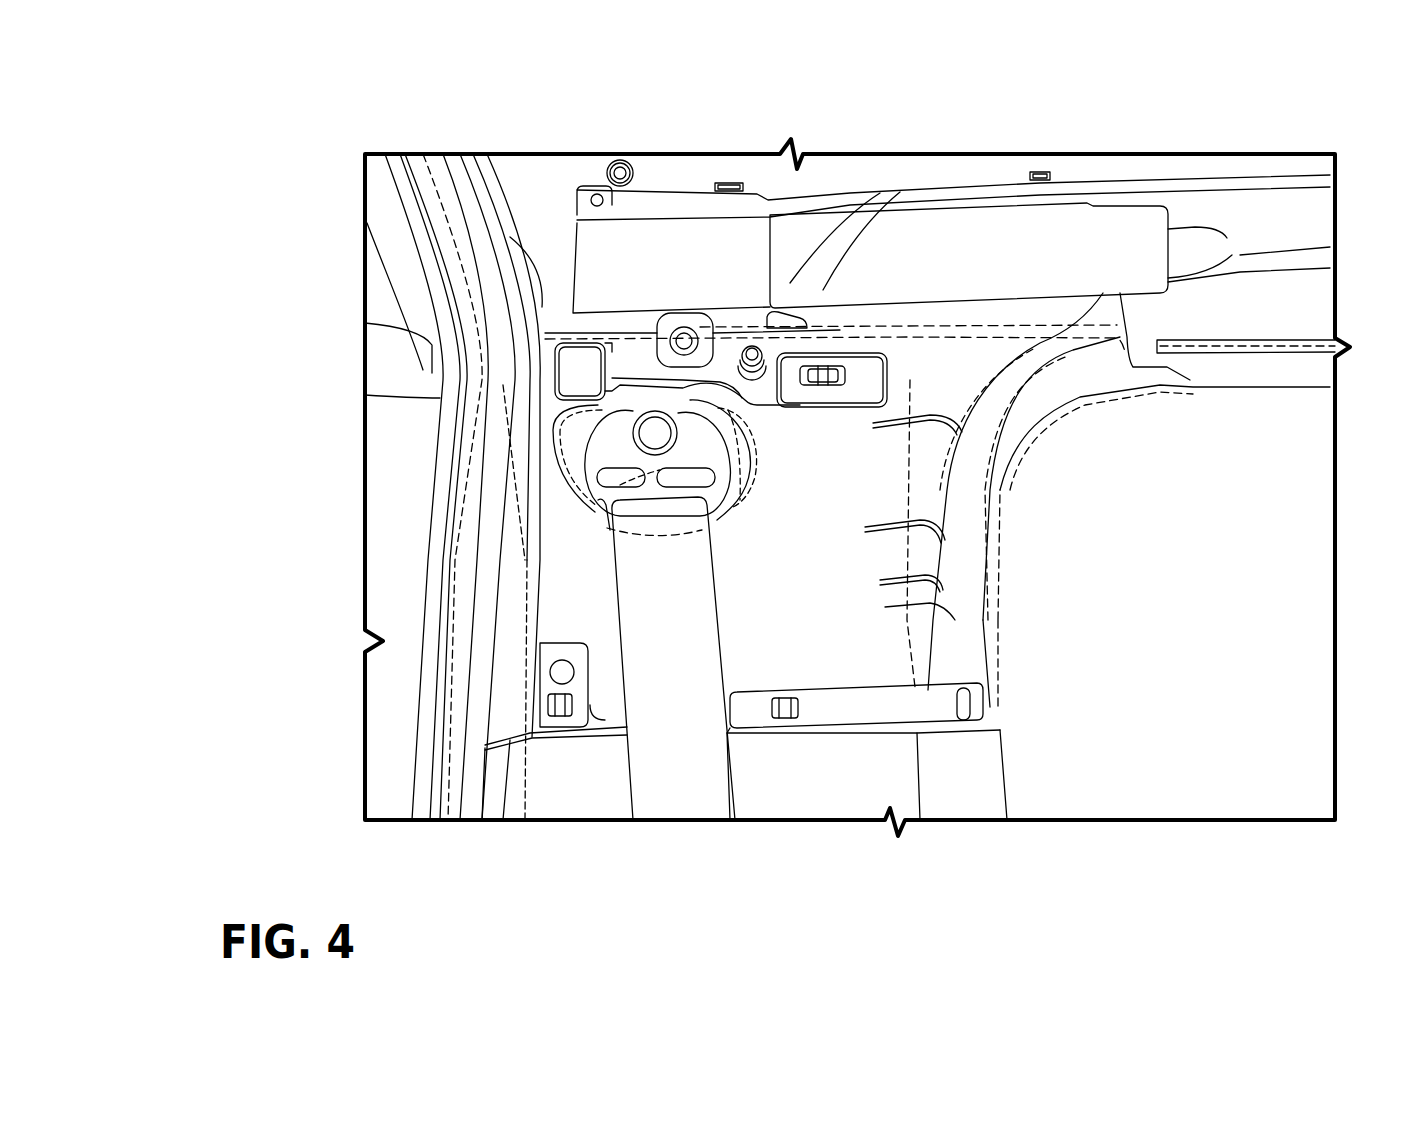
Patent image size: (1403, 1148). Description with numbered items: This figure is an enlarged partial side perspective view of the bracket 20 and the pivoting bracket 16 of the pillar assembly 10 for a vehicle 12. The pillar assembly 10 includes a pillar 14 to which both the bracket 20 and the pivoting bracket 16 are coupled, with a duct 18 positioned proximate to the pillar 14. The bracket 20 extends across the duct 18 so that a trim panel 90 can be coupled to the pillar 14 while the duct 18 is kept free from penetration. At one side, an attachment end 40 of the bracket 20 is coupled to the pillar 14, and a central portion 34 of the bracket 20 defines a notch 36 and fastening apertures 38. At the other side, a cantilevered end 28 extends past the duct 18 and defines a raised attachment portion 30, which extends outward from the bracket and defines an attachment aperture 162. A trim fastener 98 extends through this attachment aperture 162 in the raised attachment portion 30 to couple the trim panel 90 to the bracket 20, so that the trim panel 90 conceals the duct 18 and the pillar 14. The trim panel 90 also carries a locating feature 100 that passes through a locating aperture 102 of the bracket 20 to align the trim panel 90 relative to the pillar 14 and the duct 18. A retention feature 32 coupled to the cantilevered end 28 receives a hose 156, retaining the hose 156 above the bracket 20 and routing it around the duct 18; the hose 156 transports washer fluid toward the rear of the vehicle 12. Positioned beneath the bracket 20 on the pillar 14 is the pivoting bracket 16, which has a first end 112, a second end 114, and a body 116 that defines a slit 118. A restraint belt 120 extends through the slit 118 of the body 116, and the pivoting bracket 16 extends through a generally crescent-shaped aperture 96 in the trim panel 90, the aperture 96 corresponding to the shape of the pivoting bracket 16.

The pillar assembly 10 is at (483, 337).
The vehicle 12 is at (318, 173).
The pillar 14 is at (553, 410).
The pivoting bracket 16 is at (565, 487).
The duct 18 is at (885, 545).
The bracket 20 is at (628, 343).
The cantilevered end 28 is at (910, 378).
The raised attachment portion 30 is at (890, 345).
The retention feature 32 is at (790, 300).
The central portion 34 is at (650, 377).
The notch 36 is at (751, 344).
The fastening apertures 38 is at (684, 340).
The attachment end 40 is at (570, 363).
The trim panel 90 is at (1043, 320).
The aperture 96 is at (735, 500).
The trim fastener 98 is at (1003, 300).
The locating feature 100 is at (728, 352).
The locating aperture 102 is at (815, 352).
The first end 112 is at (577, 430).
The second end 114 is at (727, 448).
The body 116 is at (580, 457).
The slit 118 is at (603, 503).
The restraint belt 120 is at (677, 750).
The hose 156 is at (962, 312).
The attachment aperture 162 is at (803, 380).